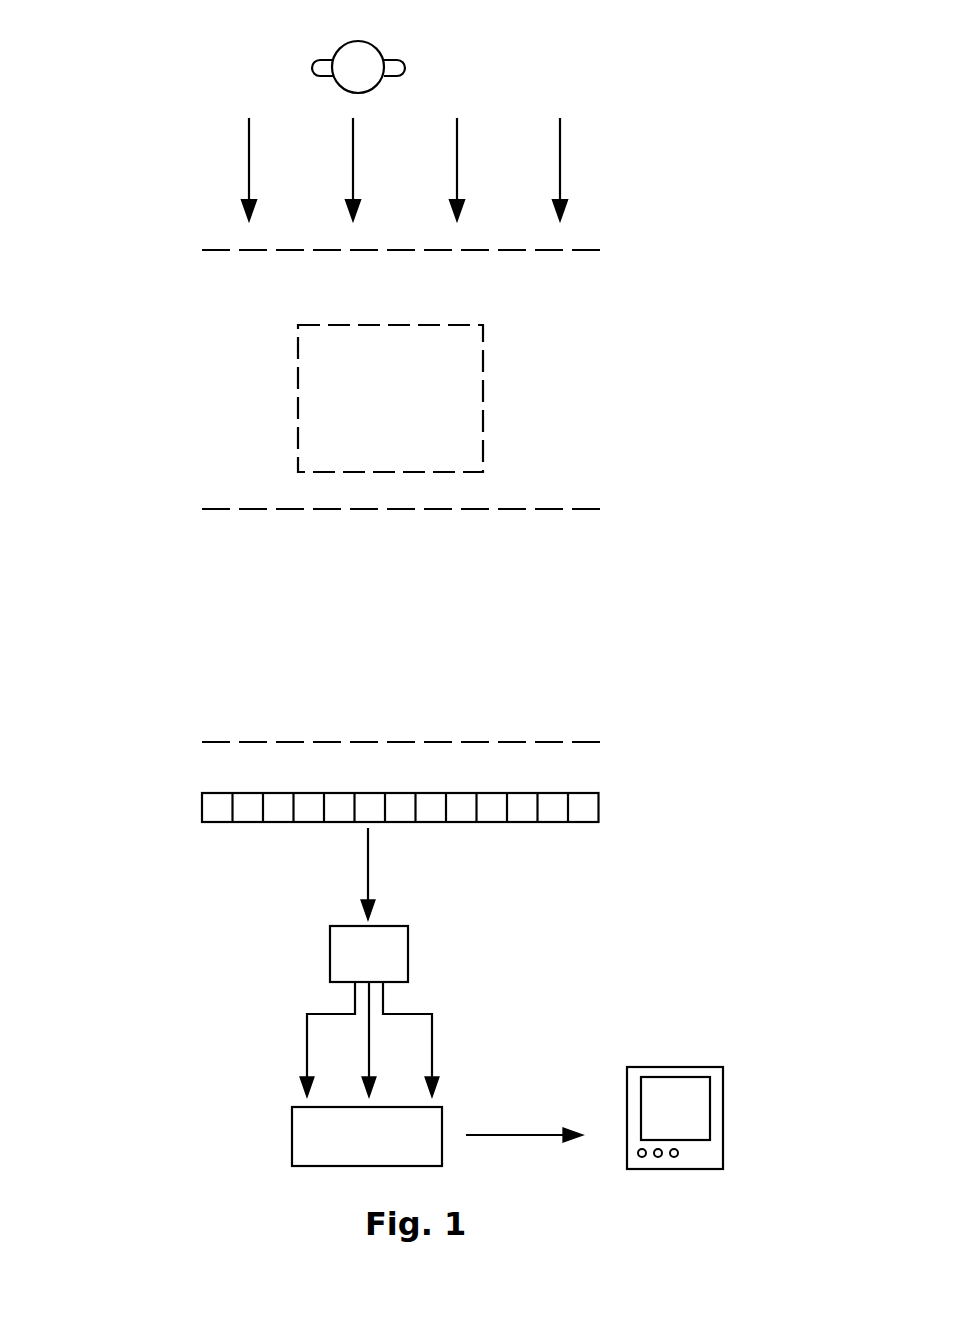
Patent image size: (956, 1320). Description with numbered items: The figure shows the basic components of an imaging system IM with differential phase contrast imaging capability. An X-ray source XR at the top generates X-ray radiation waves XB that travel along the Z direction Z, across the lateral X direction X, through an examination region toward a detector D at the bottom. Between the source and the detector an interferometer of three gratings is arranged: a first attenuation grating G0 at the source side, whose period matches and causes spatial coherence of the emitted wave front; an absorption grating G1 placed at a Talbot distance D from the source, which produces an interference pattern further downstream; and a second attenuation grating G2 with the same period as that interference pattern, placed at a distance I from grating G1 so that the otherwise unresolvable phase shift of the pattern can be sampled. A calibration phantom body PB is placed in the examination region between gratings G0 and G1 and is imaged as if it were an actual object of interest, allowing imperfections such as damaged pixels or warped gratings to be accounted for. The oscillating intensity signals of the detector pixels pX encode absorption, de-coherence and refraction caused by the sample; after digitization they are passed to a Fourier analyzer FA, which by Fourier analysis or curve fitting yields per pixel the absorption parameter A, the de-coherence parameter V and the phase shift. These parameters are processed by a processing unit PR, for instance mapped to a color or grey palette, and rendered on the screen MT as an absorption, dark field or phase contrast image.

The imaging system IM is at (706, 86).
The X-ray source XR is at (392, 45).
The X-ray radiation waves XB is at (522, 160).
The X direction X is at (790, 210).
The Z direction Z is at (93, 65).
The first attenuation grating G0 is at (423, 249).
The detector D is at (123, 495).
The calibration phantom body PB is at (451, 383).
The absorption grating G1 is at (423, 508).
The distance l I is at (123, 540).
The second attenuation grating G2 is at (423, 741).
The detector pixels pX is at (360, 815).
The Fourier analyzer FA is at (369, 905).
The absorption parameter A is at (315, 1039).
The de-coherence parameter V is at (358, 1039).
The processing unit PR is at (320, 1139).
The screen MT is at (693, 1108).